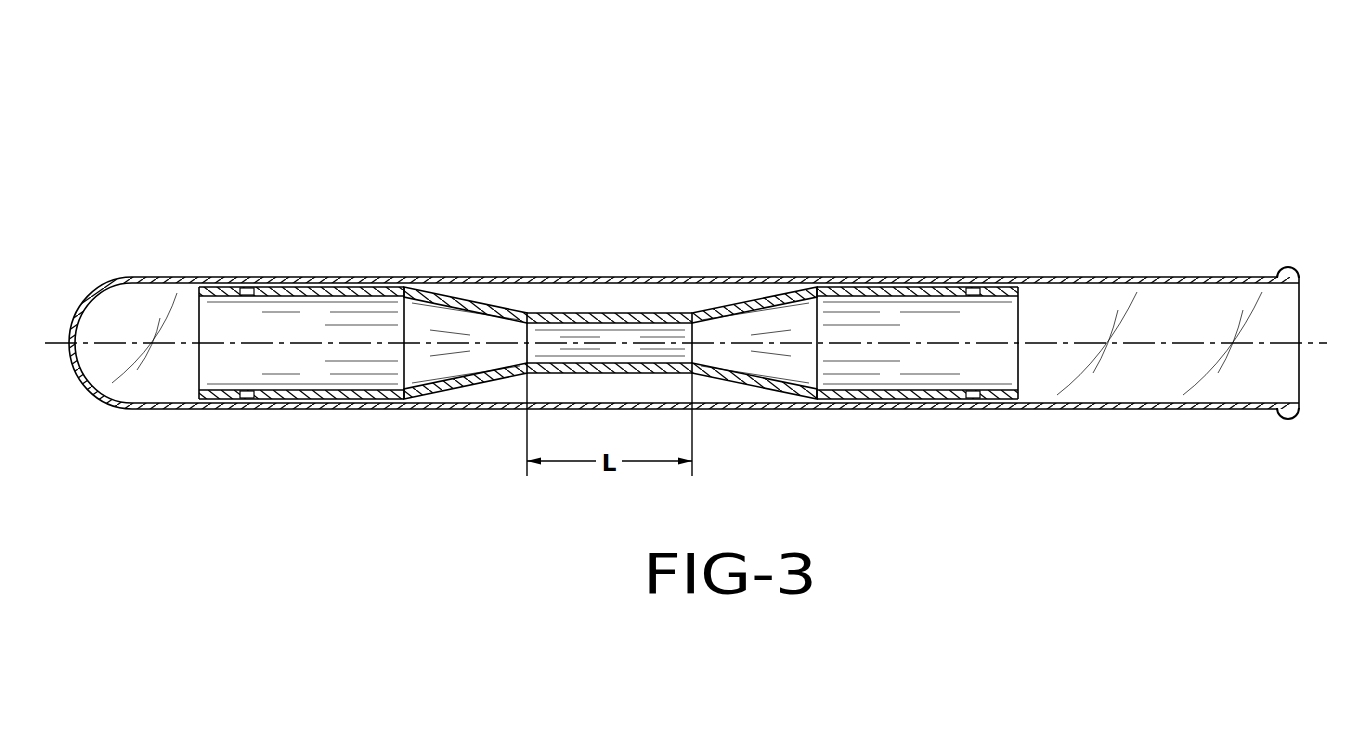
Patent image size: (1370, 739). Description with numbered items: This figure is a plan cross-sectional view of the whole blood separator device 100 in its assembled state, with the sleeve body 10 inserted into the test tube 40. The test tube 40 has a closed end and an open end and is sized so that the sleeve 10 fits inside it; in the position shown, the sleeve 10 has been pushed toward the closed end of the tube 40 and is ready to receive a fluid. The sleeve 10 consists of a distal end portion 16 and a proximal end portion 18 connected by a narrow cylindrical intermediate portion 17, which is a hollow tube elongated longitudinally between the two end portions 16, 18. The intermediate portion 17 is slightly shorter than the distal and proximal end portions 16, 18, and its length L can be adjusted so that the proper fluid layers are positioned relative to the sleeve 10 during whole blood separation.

The whole blood separator device 100 is at (684, 231).
The sleeve body 10 is at (608, 296).
The distal end portion 16 is at (305, 328).
The intermediate portion 17 is at (592, 333).
The proximal end portion 18 is at (915, 327).
The test tube 40 is at (1082, 270).